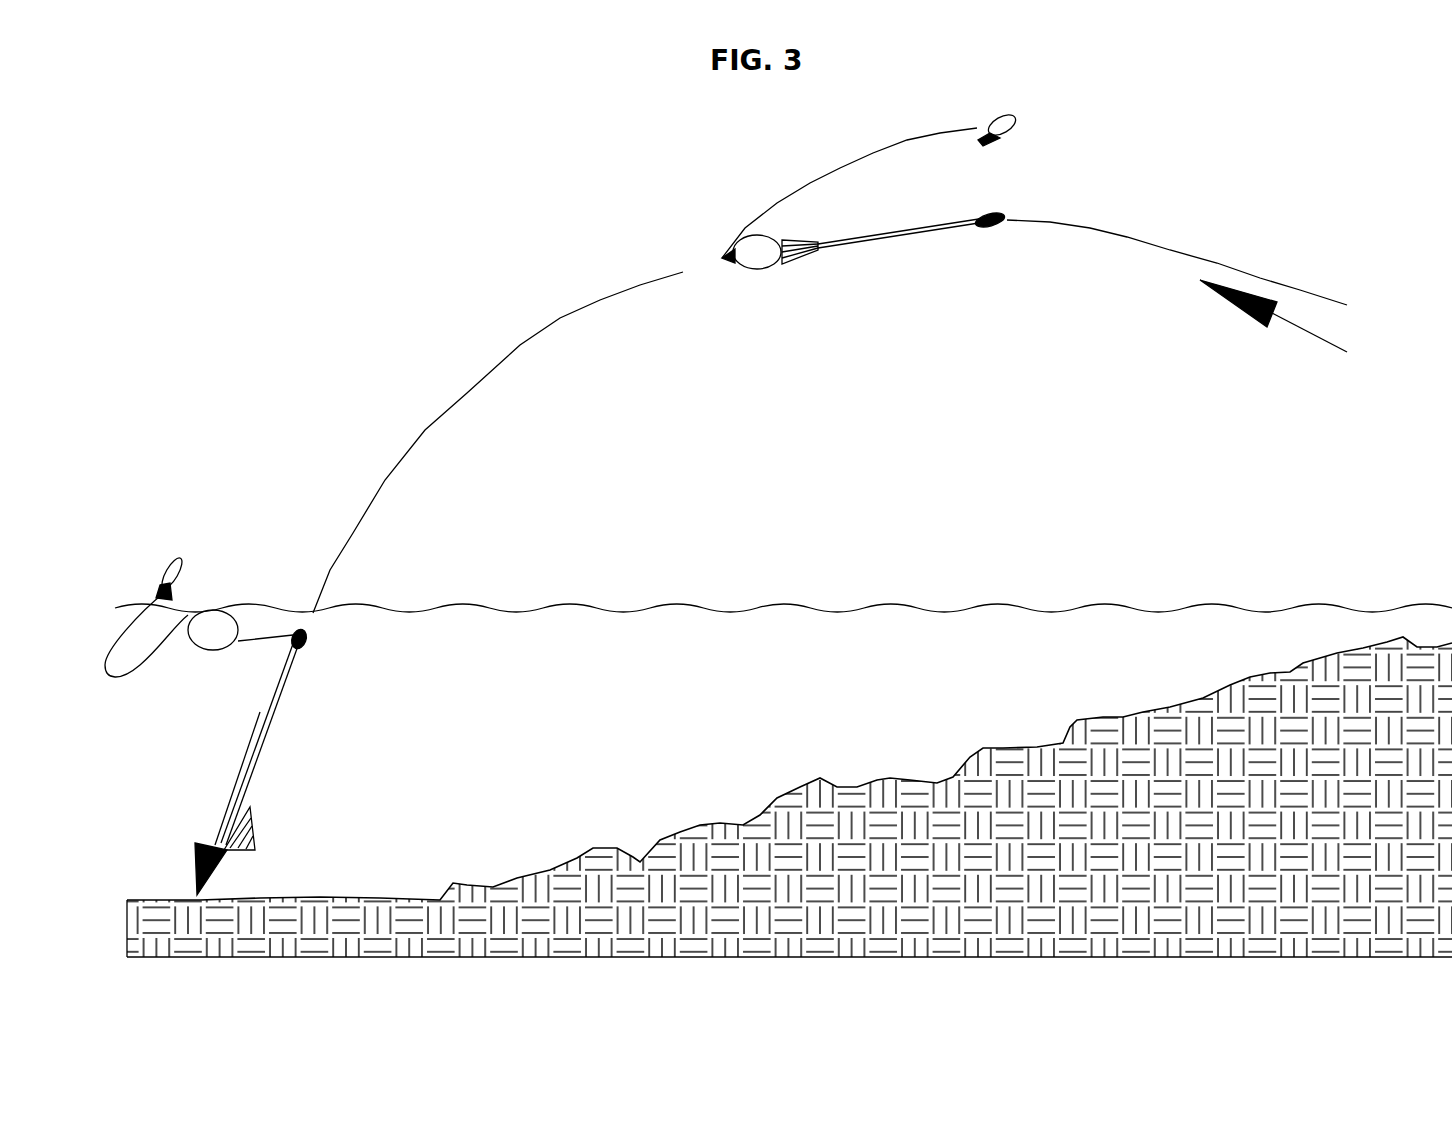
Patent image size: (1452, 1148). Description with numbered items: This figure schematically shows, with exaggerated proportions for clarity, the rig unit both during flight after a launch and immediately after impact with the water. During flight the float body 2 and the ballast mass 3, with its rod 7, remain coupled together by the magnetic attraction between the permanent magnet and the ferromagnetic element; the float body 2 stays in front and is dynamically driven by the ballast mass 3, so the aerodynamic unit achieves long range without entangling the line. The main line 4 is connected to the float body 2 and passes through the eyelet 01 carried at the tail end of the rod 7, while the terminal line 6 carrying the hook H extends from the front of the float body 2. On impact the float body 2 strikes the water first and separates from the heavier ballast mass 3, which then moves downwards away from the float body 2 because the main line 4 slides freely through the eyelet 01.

The float body 2 is at (762, 270).
The ballast mass 3 is at (807, 252).
The main line 4 is at (1128, 240).
The terminal line 6 is at (873, 153).
The rod 7 is at (887, 240).
The eyelet 01 is at (1000, 222).
The hook H is at (1003, 147).